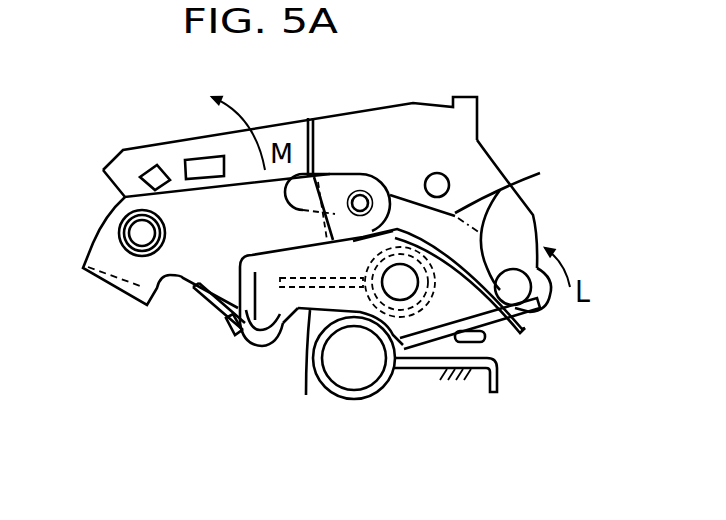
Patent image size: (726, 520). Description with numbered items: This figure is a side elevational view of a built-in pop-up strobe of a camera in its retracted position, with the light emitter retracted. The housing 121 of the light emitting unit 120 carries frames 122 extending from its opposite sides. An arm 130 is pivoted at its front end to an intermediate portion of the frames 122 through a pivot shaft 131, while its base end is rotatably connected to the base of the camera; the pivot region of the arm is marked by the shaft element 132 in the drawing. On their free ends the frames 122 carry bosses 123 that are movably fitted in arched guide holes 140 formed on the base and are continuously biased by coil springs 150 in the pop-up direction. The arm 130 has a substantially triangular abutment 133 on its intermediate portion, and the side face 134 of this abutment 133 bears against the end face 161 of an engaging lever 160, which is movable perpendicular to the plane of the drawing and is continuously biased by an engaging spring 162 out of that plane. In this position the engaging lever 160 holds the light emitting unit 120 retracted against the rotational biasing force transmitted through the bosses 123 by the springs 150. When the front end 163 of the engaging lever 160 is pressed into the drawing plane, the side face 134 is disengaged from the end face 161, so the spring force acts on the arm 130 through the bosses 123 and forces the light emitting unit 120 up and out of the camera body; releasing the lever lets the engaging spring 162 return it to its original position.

The light emitting unit 120 is at (315, 168).
The housing 121 is at (170, 145).
The frames 122 is at (480, 142).
The bosses 123 is at (535, 230).
The arm 130 is at (120, 263).
The pivot shaft 131 is at (360, 203).
The support shaft 132 is at (140, 240).
The abutment 133 is at (192, 290).
The side face 134 is at (257, 335).
The arched guide holes 140 is at (522, 173).
The coil springs 150 is at (372, 400).
The engaging lever 160 is at (367, 358).
The end face 161 is at (220, 333).
The engaging spring 162 is at (518, 335).
The front end 163 is at (303, 313).